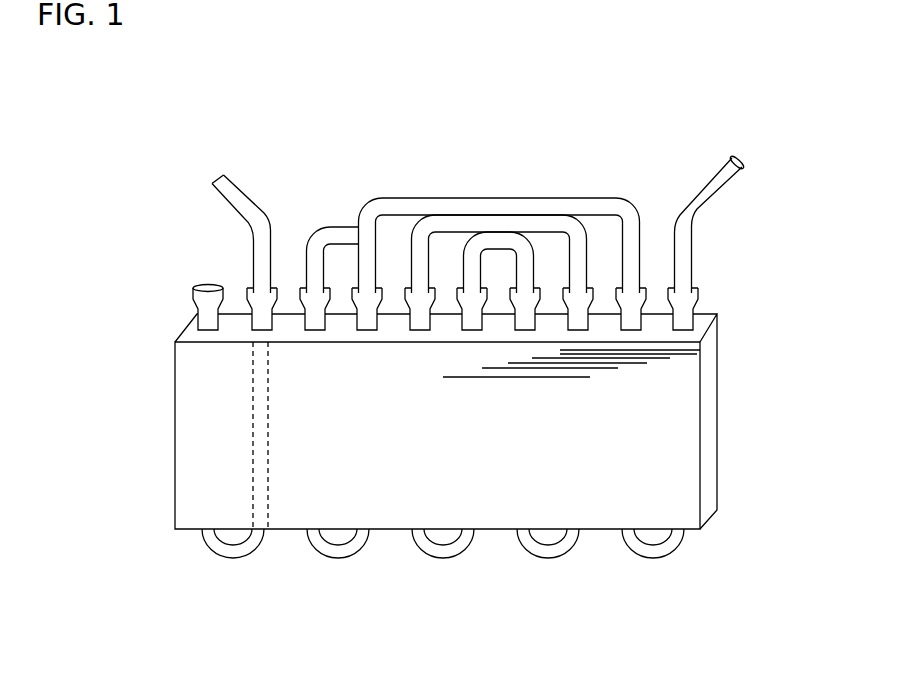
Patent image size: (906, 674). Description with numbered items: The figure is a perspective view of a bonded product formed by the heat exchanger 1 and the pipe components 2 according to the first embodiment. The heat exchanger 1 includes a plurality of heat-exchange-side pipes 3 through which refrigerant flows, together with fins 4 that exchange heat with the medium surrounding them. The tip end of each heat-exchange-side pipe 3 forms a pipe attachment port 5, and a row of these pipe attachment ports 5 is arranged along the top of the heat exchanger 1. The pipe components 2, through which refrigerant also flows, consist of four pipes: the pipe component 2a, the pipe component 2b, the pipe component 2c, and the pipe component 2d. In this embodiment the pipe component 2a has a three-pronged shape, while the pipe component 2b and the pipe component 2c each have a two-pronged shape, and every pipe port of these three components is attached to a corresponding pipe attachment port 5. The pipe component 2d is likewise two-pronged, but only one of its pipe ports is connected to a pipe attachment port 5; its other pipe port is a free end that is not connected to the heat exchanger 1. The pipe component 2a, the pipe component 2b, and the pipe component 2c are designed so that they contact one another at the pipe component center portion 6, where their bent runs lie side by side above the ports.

The heat exchanger 1 is at (485, 358).
The pipe components 2 is at (478, 197).
The pipe component 2a is at (562, 210).
The pipe component 2b is at (577, 233).
The pipe component 2c is at (478, 242).
The pipe component 2d is at (240, 198).
The heat-exchange-side pipe 3 is at (243, 550).
The fins 4 is at (710, 383).
The pipe attachment port 5 is at (214, 298).
The pipe component center portion 6 is at (515, 228).